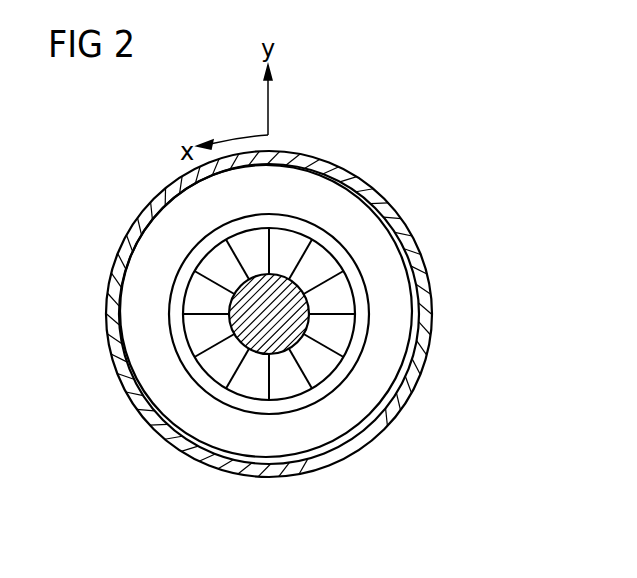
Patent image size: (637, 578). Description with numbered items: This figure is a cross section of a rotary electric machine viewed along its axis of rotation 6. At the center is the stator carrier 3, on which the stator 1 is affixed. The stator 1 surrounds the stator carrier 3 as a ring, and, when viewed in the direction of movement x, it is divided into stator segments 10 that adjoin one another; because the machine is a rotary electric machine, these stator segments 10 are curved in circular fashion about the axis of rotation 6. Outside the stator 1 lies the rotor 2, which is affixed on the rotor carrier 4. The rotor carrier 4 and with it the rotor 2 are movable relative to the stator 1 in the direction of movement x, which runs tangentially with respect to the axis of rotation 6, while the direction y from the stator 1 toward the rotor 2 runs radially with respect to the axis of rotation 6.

The stator 1 is at (358, 324).
The rotor 2 is at (344, 421).
The stator carrier 3 is at (229, 316).
The rotor carrier 4 is at (113, 342).
The axis of rotation 6 is at (310, 302).
The stator segments 10 is at (258, 246).